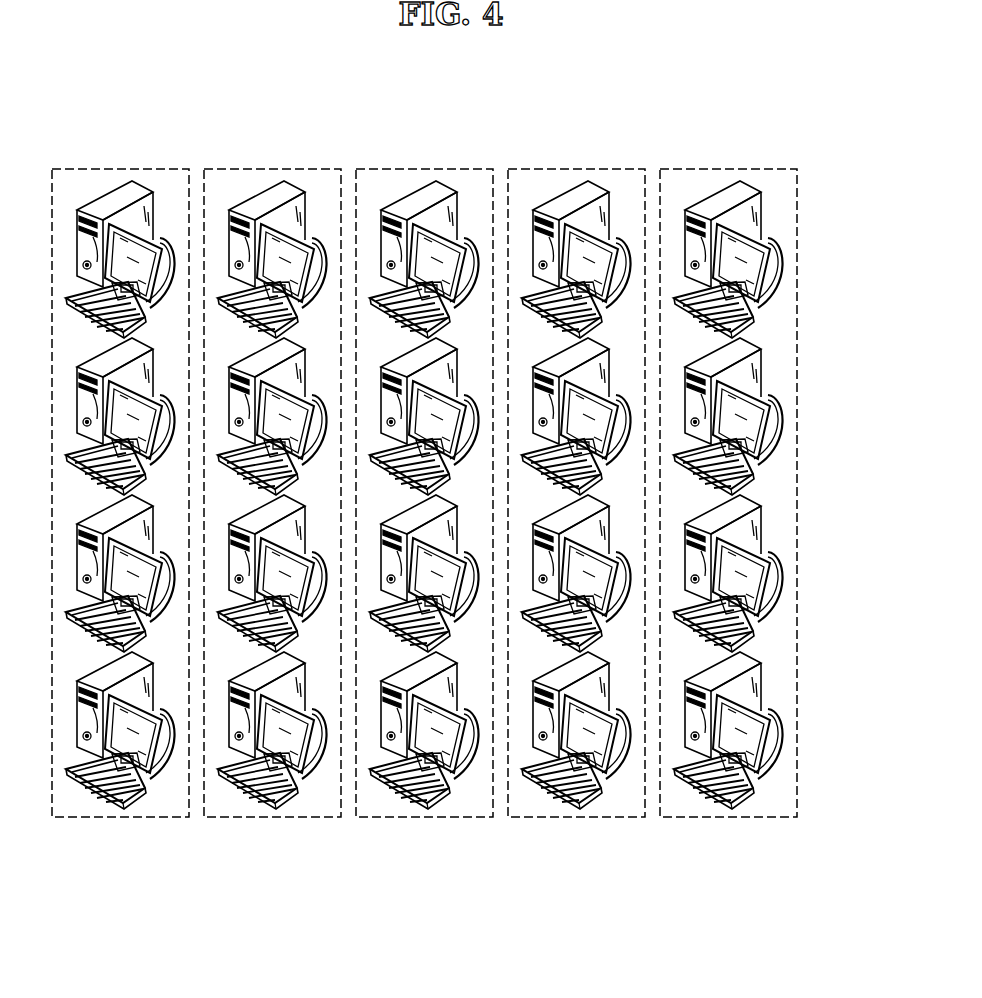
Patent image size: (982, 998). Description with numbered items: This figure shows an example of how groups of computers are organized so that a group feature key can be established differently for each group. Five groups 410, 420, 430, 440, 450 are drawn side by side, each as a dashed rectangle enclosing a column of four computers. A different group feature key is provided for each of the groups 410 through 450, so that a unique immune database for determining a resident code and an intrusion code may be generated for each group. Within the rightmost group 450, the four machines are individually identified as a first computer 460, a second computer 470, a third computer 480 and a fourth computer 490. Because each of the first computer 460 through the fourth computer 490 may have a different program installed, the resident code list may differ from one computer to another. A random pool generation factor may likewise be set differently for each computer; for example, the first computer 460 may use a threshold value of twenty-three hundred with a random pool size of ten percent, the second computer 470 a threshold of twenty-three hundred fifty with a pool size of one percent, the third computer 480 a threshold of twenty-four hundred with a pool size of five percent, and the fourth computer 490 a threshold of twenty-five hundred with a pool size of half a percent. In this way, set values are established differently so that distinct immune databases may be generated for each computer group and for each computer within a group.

The group 410 is at (120, 817).
The group 420 is at (272, 817).
The group 430 is at (424, 817).
The group 440 is at (576, 817).
The group 450 is at (778, 556).
The first computer 460 is at (763, 220).
The second computer 470 is at (763, 377).
The third computer 480 is at (763, 534).
The fourth computer 490 is at (763, 691).